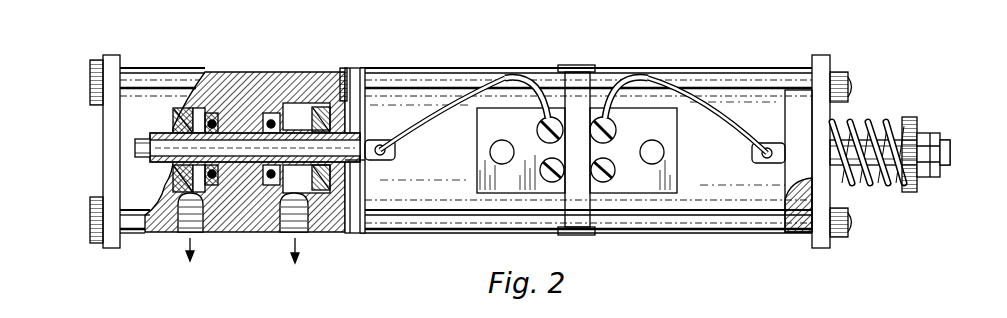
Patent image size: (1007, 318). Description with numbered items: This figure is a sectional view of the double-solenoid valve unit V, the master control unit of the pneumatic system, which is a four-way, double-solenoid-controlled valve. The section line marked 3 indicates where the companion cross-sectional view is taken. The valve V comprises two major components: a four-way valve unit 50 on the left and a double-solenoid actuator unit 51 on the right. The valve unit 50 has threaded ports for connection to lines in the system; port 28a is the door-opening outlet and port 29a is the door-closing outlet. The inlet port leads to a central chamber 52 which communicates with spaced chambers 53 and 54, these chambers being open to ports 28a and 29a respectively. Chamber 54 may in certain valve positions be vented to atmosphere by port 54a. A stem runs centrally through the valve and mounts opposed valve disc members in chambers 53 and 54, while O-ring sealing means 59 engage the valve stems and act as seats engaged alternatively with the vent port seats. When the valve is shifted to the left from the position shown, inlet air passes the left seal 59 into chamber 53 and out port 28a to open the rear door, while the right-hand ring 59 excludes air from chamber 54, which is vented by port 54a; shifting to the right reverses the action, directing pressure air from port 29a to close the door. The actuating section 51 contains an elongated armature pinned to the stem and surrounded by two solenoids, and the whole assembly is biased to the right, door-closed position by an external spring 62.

The double-solenoid valve unit V is at (98, 117).
The section line 3- 3 is at (135, 148).
The double-solenoid actuator unit 51 is at (535, 236).
The four-way valve unit 50 is at (256, 236).
The central chamber 52 is at (243, 165).
The chamber 53 is at (184, 108).
The chamber 54 is at (302, 110).
The atmosphere port 54a is at (357, 230).
The O-ring sealing means 59 is at (215, 112).
The door-opening outlet port 28a is at (178, 232).
The door-closing outlet port 29a is at (306, 230).
The external spring 62 is at (865, 118).